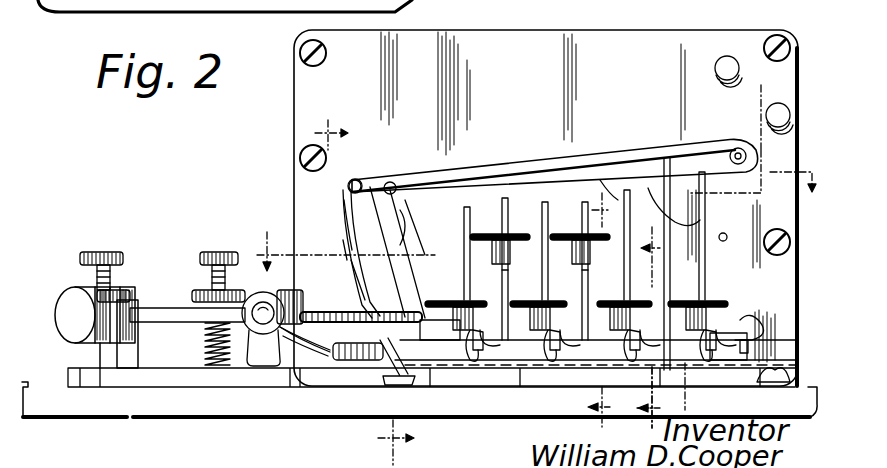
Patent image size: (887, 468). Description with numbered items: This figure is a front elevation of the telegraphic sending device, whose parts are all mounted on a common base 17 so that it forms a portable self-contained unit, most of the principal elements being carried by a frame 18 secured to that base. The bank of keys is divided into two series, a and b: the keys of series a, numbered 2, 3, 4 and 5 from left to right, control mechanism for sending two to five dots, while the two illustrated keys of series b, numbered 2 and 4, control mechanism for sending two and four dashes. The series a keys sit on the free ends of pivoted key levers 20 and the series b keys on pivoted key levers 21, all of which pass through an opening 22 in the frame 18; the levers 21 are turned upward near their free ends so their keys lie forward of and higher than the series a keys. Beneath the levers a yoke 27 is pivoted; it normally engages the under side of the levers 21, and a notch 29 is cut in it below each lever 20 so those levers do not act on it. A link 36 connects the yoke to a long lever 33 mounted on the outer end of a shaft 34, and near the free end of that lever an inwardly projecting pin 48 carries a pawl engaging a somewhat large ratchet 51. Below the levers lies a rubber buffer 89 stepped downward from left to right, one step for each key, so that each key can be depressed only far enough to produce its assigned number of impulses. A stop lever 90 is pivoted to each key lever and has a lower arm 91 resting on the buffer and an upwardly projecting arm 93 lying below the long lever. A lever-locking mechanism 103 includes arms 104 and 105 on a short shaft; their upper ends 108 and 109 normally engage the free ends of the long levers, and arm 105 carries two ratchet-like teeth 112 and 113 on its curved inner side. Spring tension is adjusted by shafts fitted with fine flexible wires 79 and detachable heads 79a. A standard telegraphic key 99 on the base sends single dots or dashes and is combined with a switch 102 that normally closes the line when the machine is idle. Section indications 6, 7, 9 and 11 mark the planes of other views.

The frame 18 is at (546, 208).
The section line 11 is at (364, 283).
The pin 48 is at (386, 172).
The upper end of arm 105 109 is at (357, 180).
The upper end of arm 104 108 is at (395, 185).
The arm 104 is at (396, 195).
The lever 33 is at (478, 172).
The stop lever 90 is at (620, 200).
The upwardly projecting arm 93 is at (648, 186).
The shaft 34 is at (738, 150).
The head 79a is at (728, 66).
The fine flexible wire 79 is at (778, 114).
The section line 9 is at (727, 247).
The ratchet-like tooth 112 is at (345, 215).
The lever-locking mechanism 103 is at (343, 235).
The section line 7 is at (343, 249).
The arm 105 is at (345, 252).
The ratchet-like tooth 113 is at (358, 280).
The telegraphic key 99 is at (152, 310).
The ratchet 51 is at (392, 244).
The link 36 is at (667, 228).
The key 2 is at (516, 232).
The key 3 is at (532, 300).
The key 4 is at (566, 232).
The key 5 is at (678, 300).
The section line 6 is at (595, 306).
The key lever 21 is at (502, 290).
The key lever 20 is at (470, 338).
The opening 22 is at (748, 318).
The yoke 27 is at (735, 345).
The notch 29 is at (440, 370).
The lower arm 91 is at (472, 352).
The rubber buffer 89 is at (400, 385).
The manipulation-operated switch 102 is at (258, 335).
The base 17 is at (130, 415).
The key series a is at (432, 304).
The key series b is at (490, 230).